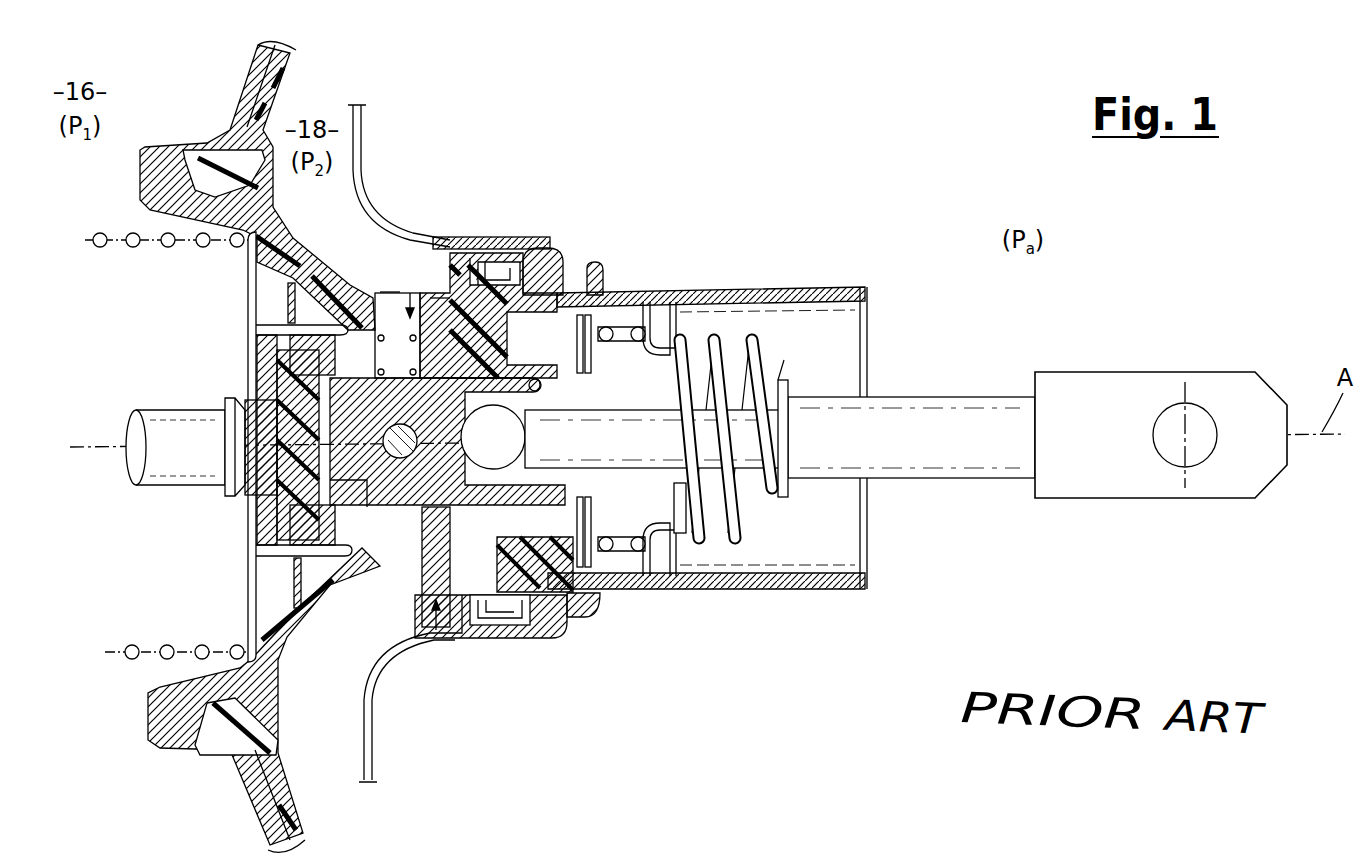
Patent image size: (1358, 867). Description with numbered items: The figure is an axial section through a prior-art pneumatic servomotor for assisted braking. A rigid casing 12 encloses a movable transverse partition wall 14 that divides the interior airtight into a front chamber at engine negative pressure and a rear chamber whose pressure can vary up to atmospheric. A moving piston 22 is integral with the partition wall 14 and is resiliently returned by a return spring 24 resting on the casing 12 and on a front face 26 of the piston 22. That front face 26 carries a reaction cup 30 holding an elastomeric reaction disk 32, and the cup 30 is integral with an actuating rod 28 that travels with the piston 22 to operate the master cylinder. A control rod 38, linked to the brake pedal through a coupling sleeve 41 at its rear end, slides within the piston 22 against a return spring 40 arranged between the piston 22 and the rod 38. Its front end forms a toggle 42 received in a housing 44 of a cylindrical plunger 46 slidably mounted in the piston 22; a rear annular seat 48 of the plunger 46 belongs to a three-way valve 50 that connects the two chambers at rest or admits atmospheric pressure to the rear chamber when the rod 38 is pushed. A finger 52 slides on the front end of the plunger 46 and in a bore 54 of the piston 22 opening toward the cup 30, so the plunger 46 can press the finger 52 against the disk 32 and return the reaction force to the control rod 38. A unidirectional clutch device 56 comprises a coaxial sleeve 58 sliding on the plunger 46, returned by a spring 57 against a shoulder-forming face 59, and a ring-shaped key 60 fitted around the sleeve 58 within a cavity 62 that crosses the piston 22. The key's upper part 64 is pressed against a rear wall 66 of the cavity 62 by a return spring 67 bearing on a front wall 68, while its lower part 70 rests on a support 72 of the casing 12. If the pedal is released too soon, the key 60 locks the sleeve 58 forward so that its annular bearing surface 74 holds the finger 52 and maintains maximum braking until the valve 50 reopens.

The rigid casing 12 is at (370, 125).
The transverse partition wall 14 is at (258, 83).
The moving piston 22 is at (265, 213).
The return spring 24 is at (98, 250).
The front face 26 is at (263, 277).
The actuating rod 28 is at (160, 487).
The reaction cup 30 is at (252, 552).
The reaction disk 32 is at (283, 393).
The control rod 38 is at (970, 407).
The return spring 40 is at (765, 535).
The coupling sleeve 41 is at (1130, 388).
The toggle 42 is at (573, 590).
The housing 44 is at (550, 295).
The plunger 46 is at (371, 690).
The rear annular seat 48 is at (585, 510).
The three-way valve 50 is at (650, 575).
The finger 52 is at (275, 522).
The bore 54 is at (277, 433).
The unidirectional clutch device 56 is at (413, 293).
The spring 57 is at (400, 550).
The coaxial sleeve 58 is at (436, 590).
The shoulder-forming face 59 is at (535, 385).
The key 60 is at (452, 650).
The cavity 62 is at (390, 292).
The upper part 64 is at (437, 298).
The rear wall 66 is at (440, 300).
The return spring 67 is at (290, 325).
The front wall 68 is at (393, 297).
The lower part 70 is at (475, 625).
The support 72 is at (462, 635).
The annular bearing surface 74 is at (300, 345).